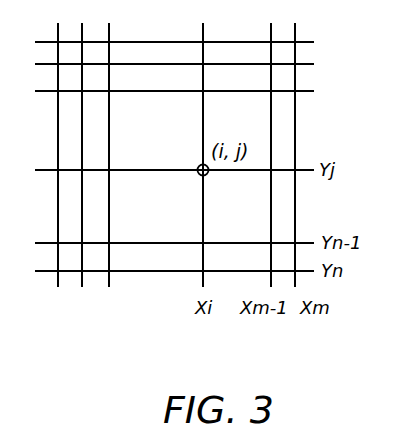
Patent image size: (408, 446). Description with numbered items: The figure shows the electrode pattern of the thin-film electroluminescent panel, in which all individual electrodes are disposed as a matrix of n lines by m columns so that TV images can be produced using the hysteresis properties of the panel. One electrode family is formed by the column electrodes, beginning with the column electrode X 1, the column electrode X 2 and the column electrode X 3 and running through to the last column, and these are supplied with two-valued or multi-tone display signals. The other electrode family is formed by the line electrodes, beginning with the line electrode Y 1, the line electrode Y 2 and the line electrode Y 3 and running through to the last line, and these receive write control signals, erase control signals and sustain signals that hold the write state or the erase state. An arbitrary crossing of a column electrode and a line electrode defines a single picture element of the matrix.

The first column electrode and line electrode (X1, Y1) 1 is at (188, 170).
The second column electrode and line electrode (X2, Y2) 2 is at (188, 170).
The third column electrode and line electrode (X3, Y3) 3 is at (188, 170).